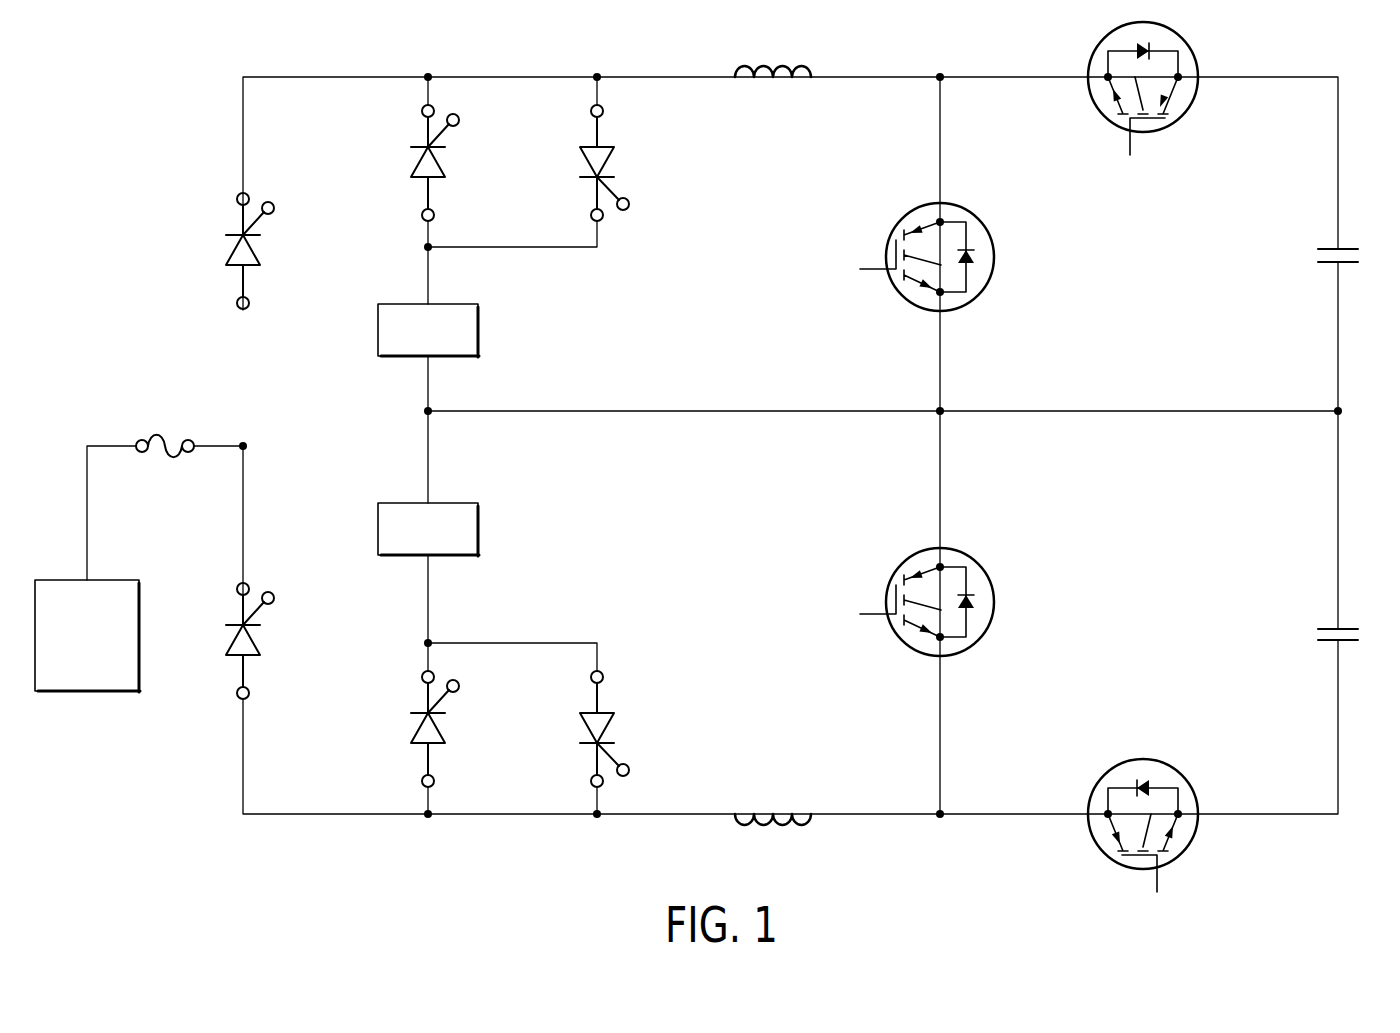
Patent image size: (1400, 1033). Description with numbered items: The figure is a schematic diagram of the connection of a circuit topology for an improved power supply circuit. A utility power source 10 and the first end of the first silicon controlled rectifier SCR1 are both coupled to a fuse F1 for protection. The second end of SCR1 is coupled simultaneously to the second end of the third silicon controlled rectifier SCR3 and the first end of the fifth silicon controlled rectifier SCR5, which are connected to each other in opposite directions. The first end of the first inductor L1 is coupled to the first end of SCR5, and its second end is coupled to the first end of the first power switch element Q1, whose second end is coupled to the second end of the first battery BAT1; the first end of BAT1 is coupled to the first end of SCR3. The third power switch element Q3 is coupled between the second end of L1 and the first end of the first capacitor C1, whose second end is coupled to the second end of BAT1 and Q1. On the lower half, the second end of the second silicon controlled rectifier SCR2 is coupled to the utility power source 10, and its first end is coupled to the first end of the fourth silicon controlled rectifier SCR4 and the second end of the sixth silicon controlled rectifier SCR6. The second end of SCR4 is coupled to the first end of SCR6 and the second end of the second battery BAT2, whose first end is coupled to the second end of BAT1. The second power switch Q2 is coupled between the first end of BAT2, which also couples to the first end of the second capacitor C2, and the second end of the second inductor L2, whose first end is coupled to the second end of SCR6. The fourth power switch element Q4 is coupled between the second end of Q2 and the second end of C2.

The utility power source 10 is at (87, 692).
The fuse F1 is at (189, 425).
The first silicon controlled rectifier SCR1 is at (283, 251).
The second silicon controlled rectifier SCR2 is at (283, 641).
The third silicon controlled rectifier SCR3 is at (398, 163).
The fourth silicon controlled rectifier SCR4 is at (398, 729).
The fifth silicon controlled rectifier SCR5 is at (566, 163).
The sixth silicon controlled rectifier SCR6 is at (566, 729).
The first battery BAT1 is at (428, 330).
The second battery BAT2 is at (428, 529).
The first inductor L1 is at (773, 51).
The second inductor L2 is at (773, 839).
The first power switch element Q1 is at (949, 257).
The second power switch element Q2 is at (950, 602).
The third power switch element Q3 is at (1143, 101).
The fourth power switch element Q4 is at (1165, 825).
The first capacitor C1 is at (1359, 257).
The second capacitor C2 is at (1359, 634).